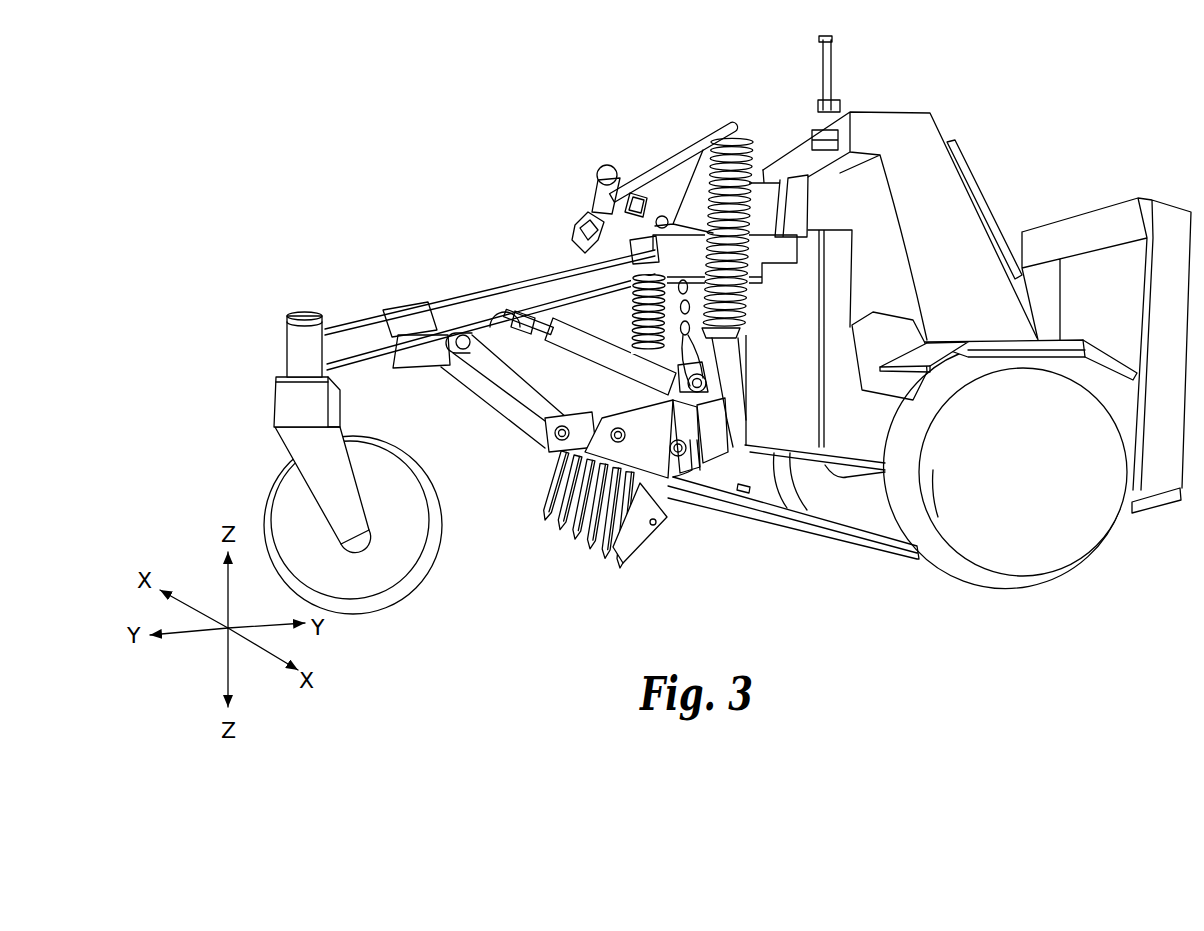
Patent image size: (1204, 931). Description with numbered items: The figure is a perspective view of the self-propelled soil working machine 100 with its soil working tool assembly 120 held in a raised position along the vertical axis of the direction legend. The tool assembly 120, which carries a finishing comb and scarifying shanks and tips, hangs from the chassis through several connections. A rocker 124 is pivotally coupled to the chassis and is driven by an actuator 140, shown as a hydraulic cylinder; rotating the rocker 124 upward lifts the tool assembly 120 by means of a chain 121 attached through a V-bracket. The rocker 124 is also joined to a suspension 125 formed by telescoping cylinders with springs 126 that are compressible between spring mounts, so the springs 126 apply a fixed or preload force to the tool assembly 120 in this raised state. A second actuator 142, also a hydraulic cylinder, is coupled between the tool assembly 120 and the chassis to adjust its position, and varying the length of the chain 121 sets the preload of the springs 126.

The machine 100 is at (263, 147).
The soil working tool assembly 120 is at (687, 523).
The chain 121 is at (598, 226).
The rocker 124 is at (655, 172).
The suspension 125 is at (753, 350).
The springs 126 is at (677, 332).
The actuator 140 is at (763, 190).
The actuator 142 is at (567, 340).